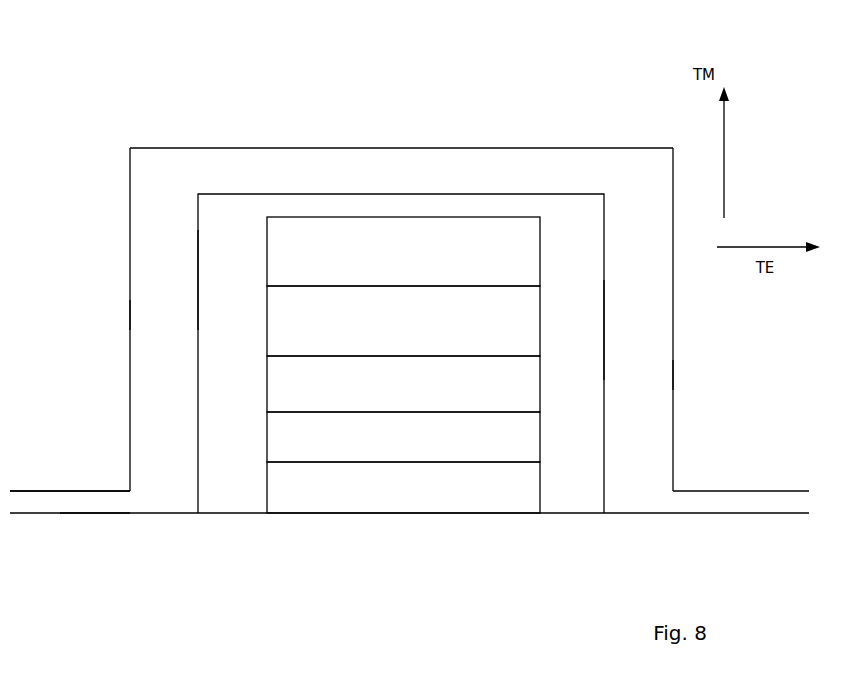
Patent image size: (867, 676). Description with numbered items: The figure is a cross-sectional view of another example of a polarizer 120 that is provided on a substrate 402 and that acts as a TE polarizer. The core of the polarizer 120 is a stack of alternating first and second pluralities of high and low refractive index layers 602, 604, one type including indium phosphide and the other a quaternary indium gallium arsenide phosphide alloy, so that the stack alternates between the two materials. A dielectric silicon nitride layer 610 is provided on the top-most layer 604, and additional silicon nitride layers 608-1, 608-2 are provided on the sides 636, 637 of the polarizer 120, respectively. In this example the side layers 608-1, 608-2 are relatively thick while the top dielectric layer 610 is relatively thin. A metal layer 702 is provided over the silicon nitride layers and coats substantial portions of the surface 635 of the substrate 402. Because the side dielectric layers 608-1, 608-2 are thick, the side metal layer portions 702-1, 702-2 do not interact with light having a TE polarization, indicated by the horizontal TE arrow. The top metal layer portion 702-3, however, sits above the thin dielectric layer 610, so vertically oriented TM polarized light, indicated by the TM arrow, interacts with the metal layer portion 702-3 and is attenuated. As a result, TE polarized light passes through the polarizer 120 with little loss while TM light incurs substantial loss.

The metal layer 702 is at (409, 259).
The metal layer portion 702-1 is at (130, 195).
The metal layer portion 702-2 is at (673, 417).
The metal layer portion 702-3 is at (422, 148).
The silicon nitride layer 610 is at (330, 193).
The silicon nitride layer 608-1 is at (605, 331).
The silicon nitride layer 608-2 is at (198, 308).
The second plurality of layers 604 is at (455, 260).
The first plurality of layers 602 is at (458, 328).
The polarizer 120 is at (33, 391).
The substrate 402 is at (568, 581).
The surface of substrate 635 is at (90, 513).
The side of polarizer 636 is at (687, 368).
The side of polarizer 637 is at (103, 312).